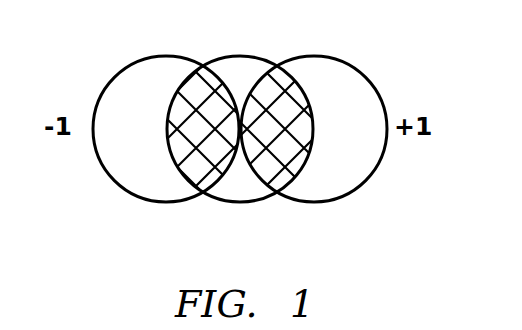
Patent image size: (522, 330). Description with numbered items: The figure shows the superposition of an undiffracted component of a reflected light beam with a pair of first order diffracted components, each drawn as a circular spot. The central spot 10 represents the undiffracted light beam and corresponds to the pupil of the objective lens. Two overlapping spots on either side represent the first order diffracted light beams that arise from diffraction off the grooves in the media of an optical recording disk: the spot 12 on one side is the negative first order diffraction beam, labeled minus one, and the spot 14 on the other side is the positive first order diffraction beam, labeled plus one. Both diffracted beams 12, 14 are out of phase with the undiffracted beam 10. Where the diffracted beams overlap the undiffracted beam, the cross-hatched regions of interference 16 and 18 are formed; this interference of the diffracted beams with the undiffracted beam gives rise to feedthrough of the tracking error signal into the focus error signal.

The spot representing undiffracted light beam 10 is at (240, 203).
The spot representing negative first order diffraction beam 12 is at (166, 203).
The spot representing positive first order diffraction beam 14 is at (313, 203).
The region of interference 16 is at (200, 66).
The region of interference 18 is at (277, 66).